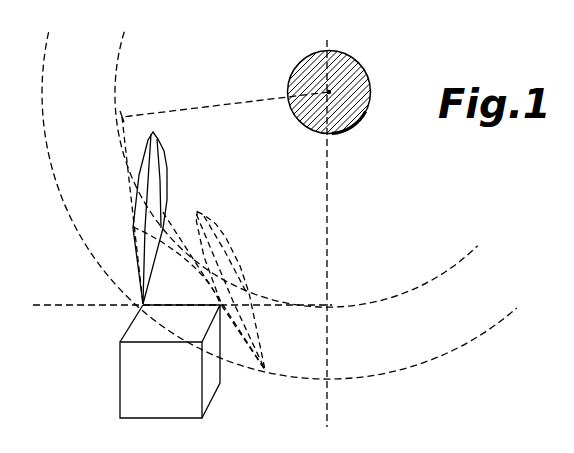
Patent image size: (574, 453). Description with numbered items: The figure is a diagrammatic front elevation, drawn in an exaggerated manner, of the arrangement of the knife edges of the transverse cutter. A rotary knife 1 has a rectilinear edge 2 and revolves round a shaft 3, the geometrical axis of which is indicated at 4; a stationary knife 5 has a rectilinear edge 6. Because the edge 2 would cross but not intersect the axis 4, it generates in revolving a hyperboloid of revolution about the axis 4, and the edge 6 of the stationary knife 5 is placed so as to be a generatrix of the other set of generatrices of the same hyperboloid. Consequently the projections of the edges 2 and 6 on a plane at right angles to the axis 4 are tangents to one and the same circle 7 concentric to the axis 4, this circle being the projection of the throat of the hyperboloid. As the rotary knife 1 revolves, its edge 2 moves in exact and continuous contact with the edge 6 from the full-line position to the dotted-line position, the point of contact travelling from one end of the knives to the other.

The rotary knife 1 is at (166, 189).
The rectilinear edge 2 is at (137, 255).
The shaft 3 is at (351, 121).
The geometrical axis 4 is at (329, 92).
The stationary knife 5 is at (130, 362).
The rectilinear edge 6 is at (181, 304).
The circle 7 is at (440, 274).